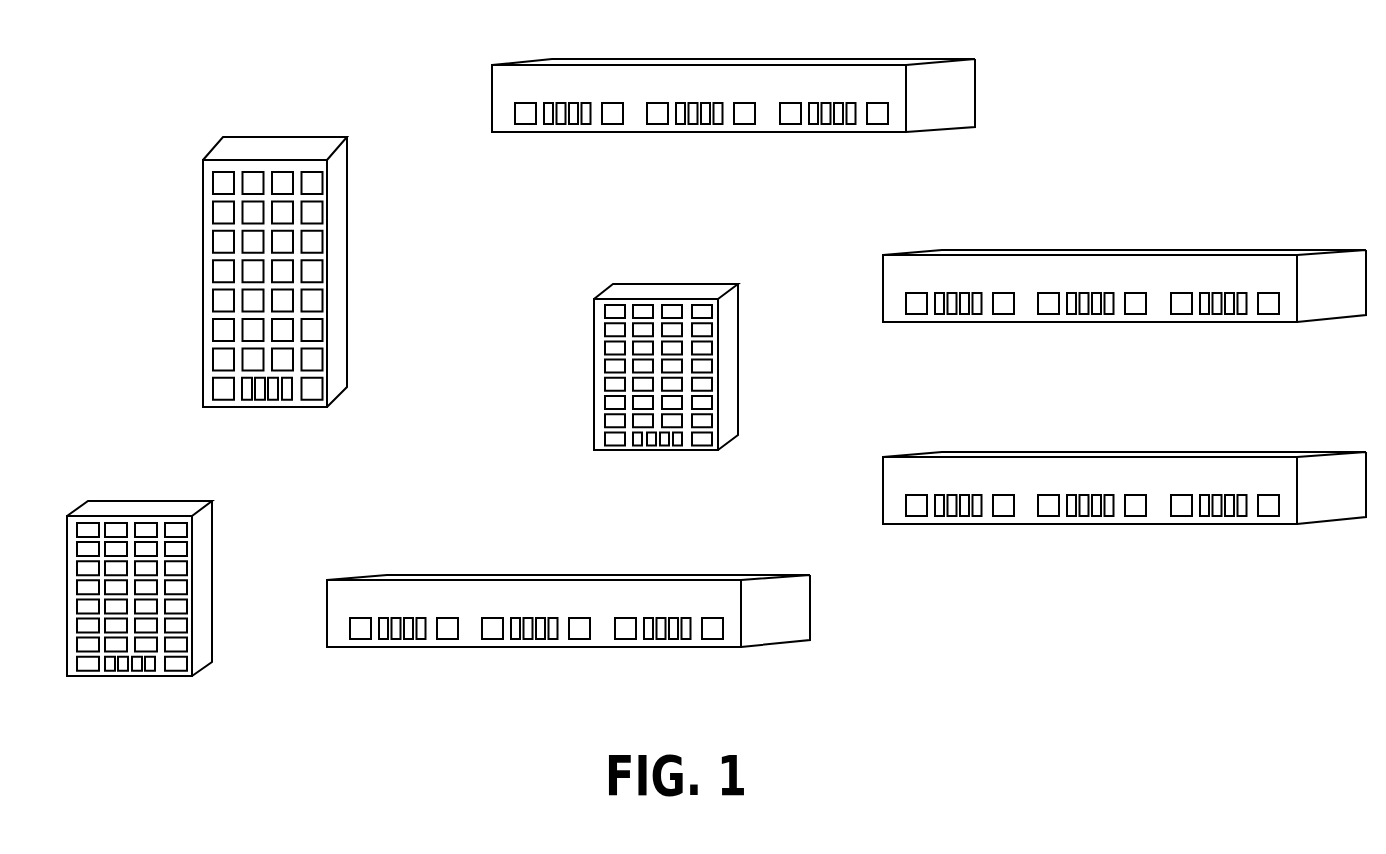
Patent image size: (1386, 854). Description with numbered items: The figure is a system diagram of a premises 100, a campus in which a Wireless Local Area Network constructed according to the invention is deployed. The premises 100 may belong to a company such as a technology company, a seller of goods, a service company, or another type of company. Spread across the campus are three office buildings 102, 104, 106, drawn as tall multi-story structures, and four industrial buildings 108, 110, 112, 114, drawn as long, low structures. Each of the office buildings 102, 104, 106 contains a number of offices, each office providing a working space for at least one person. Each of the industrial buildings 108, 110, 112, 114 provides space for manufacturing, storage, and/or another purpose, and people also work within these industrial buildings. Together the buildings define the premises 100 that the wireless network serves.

The premises 100 is at (1172, 655).
The office building 102 is at (213, 555).
The office building 104 is at (348, 257).
The office building 106 is at (739, 328).
The industrial building 108 is at (675, 572).
The industrial building 110 is at (1228, 449).
The industrial building 112 is at (1228, 247).
The industrial building 114 is at (838, 57).